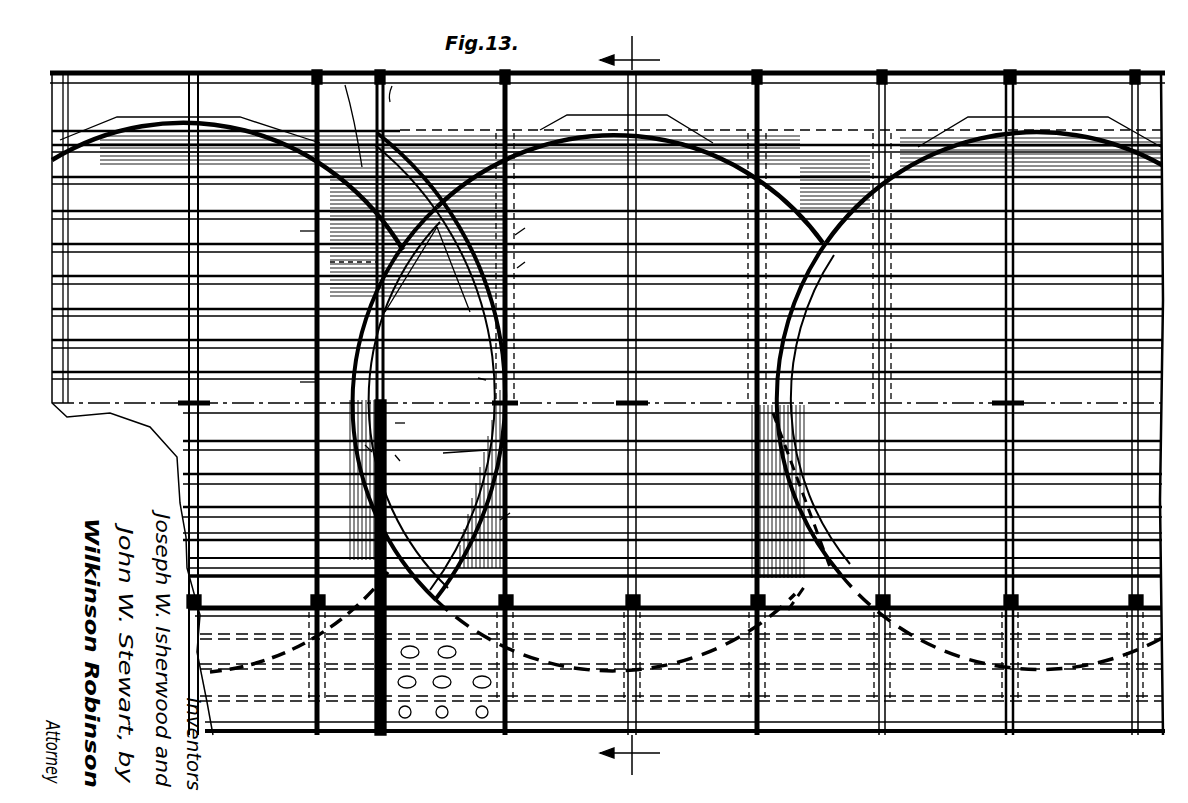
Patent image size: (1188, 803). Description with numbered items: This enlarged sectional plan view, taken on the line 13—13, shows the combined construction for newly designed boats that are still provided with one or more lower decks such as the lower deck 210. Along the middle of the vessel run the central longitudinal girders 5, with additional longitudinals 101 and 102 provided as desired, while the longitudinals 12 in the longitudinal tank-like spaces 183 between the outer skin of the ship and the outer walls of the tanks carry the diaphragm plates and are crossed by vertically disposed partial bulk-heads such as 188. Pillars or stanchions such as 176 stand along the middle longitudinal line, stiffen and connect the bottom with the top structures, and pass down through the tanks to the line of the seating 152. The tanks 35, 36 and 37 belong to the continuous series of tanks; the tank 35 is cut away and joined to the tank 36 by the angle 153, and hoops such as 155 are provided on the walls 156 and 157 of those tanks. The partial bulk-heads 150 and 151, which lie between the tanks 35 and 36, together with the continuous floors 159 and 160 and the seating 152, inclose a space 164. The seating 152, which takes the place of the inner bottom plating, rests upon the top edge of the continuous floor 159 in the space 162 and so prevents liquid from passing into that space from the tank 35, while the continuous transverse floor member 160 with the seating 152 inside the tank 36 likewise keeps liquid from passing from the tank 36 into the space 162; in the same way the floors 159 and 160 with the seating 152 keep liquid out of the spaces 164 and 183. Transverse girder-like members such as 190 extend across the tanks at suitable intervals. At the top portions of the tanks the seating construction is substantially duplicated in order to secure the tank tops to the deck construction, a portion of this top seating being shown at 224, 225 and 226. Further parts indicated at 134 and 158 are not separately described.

The central longitudinal girder 5 is at (715, 396).
The longitudinal 12 is at (119, 78).
The deck stringer 13 is at (86, 72).
The tank 35 is at (162, 125).
The tank 36 is at (607, 128).
The tank 37 is at (1052, 134).
The additional longitudinal 101 is at (135, 277).
The additional longitudinal 102 is at (1065, 528).
The bracket 134 is at (300, 382).
The partial bulk-head 150 is at (320, 103).
The partial bulk-head 151 is at (391, 98).
The seating 152 is at (223, 153).
The angle 153 is at (430, 190).
The hoop 155 is at (525, 262).
The wall 156 is at (405, 423).
The wall 157 is at (478, 378).
The bracket 158 is at (300, 231).
The continuous floor 159 is at (330, 262).
The continuous transverse floor member 160 is at (525, 228).
The space 162 is at (500, 453).
The space 164 is at (383, 172).
The pillar or stanchion 176 is at (190, 400).
The longitudinal tank-like space 183 is at (215, 95).
The partial bulk-head 188 is at (633, 102).
The transverse girder-like member 190 is at (314, 490).
The lower deck 210 is at (262, 703).
The top seating 224 is at (510, 513).
The top seating 225 is at (395, 455).
The top seating 226 is at (790, 467).